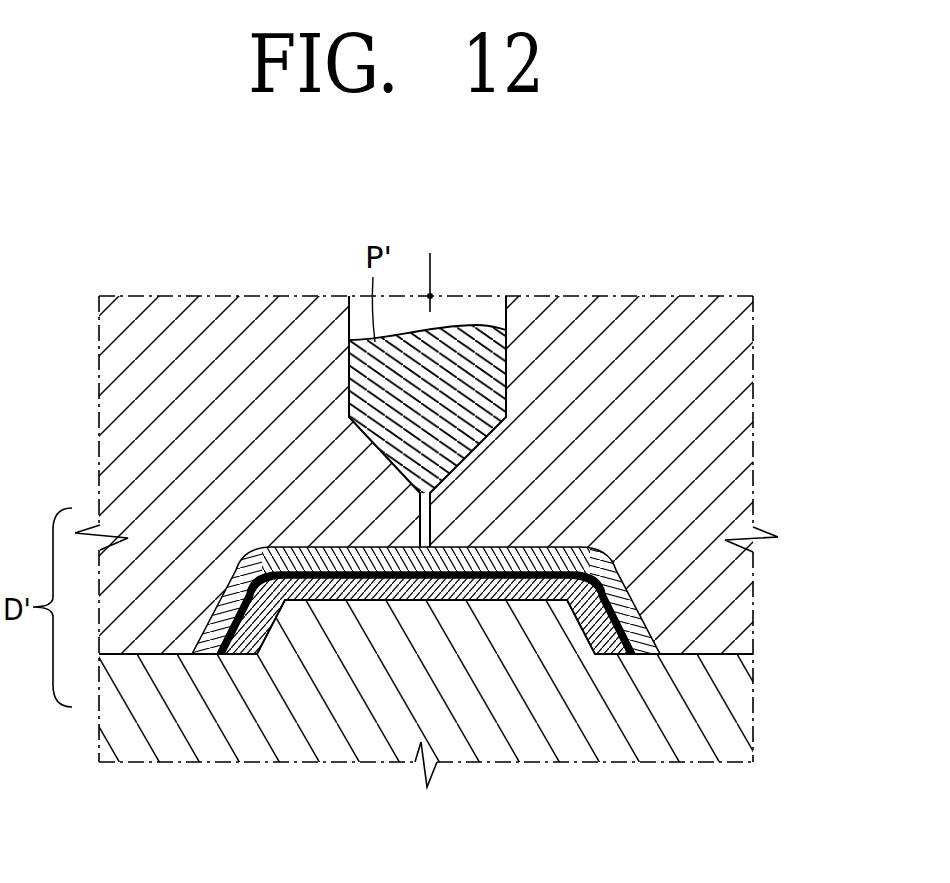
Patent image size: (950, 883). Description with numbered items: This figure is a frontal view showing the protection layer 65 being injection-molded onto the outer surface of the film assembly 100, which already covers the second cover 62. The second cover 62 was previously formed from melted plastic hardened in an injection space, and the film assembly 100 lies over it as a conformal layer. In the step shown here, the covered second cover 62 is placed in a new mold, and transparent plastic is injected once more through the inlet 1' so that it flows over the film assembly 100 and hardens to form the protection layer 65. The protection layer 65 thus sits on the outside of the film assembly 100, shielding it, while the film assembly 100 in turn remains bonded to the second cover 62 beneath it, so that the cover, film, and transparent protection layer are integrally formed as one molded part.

The second cover 62 is at (505, 600).
The film assembly 100 is at (614, 623).
The protection layer 65 is at (622, 588).
The nozzle channel 1' is at (472, 509).